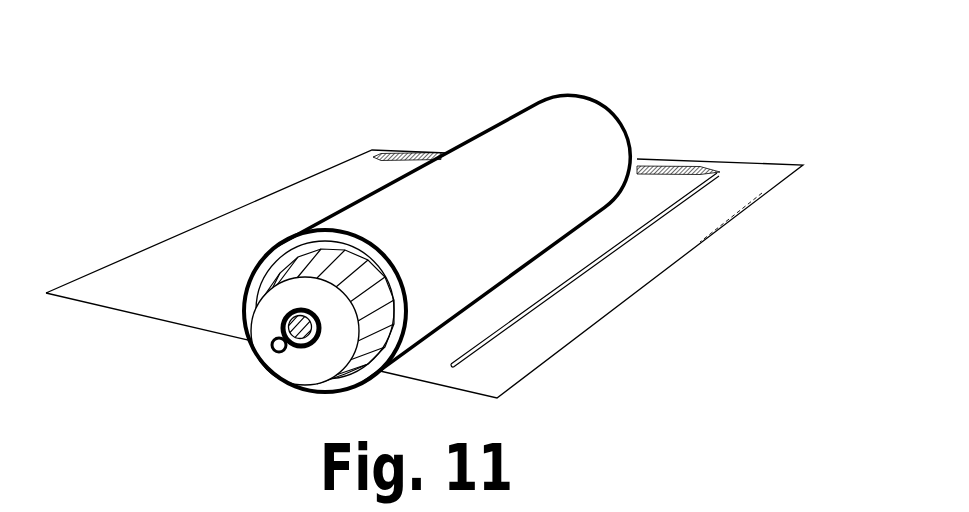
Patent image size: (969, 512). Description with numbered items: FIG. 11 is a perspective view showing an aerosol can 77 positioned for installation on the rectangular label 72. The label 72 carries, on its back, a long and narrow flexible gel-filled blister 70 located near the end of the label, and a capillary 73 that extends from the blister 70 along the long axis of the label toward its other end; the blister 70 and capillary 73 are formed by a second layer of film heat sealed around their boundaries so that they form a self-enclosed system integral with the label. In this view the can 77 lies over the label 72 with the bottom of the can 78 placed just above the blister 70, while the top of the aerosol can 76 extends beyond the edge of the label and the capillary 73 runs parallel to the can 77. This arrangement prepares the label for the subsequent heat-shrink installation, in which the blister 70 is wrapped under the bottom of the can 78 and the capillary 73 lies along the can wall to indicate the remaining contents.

The elongated blister 70 is at (691, 158).
The rectangular label 72 is at (222, 202).
The capillary 73 is at (630, 256).
The top of the aerosol can 76 is at (295, 358).
The aerosol can 77 is at (353, 174).
The bottom of the can 78 is at (661, 90).